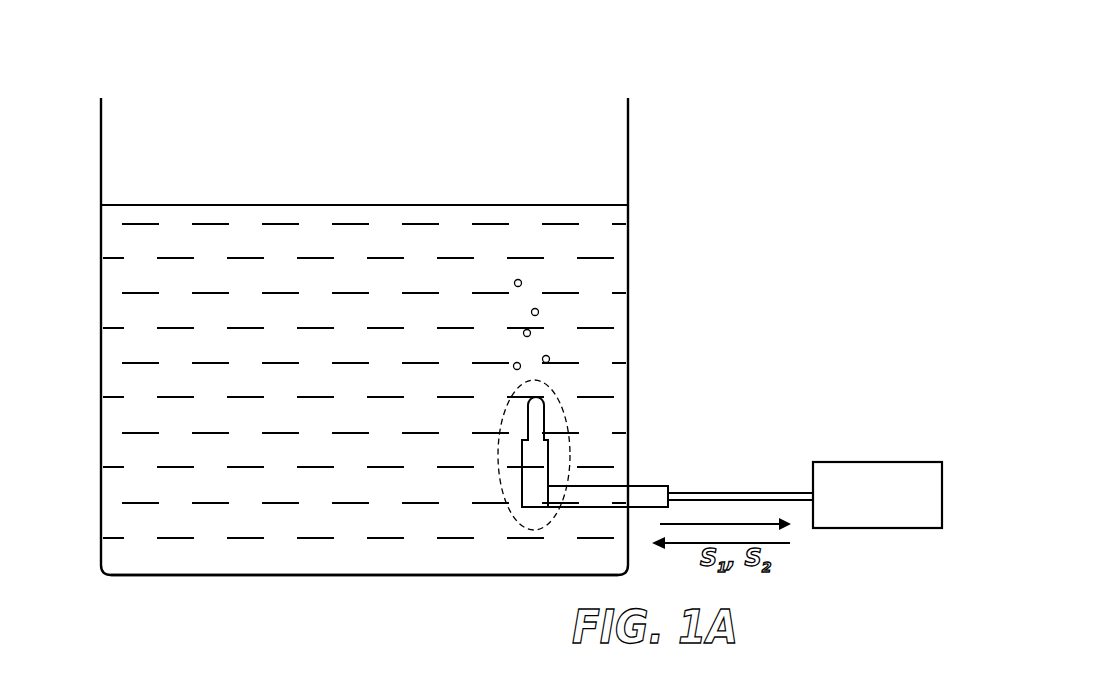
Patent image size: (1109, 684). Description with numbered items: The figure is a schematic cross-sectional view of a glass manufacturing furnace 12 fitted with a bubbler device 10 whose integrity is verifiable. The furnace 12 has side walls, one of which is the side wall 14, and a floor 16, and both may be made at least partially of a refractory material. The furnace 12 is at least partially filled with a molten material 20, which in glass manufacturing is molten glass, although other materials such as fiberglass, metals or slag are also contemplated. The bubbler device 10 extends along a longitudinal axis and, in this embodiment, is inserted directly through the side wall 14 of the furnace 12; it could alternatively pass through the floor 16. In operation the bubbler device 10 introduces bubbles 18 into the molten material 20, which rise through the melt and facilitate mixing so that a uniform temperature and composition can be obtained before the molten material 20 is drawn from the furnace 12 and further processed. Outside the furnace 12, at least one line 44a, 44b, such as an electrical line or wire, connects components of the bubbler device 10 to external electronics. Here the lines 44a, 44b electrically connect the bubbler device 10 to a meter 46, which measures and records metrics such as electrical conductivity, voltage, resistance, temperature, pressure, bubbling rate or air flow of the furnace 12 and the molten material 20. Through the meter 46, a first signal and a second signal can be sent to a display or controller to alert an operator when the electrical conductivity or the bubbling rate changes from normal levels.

The bubbler device 10 is at (508, 491).
The furnace 12 is at (650, 54).
The side wall 14 is at (614, 222).
The floor 16 is at (228, 577).
The bubbles 18 is at (539, 314).
The molten material 20 is at (178, 333).
The line 44a is at (773, 489).
The line 44b is at (761, 453).
The meter 46 is at (910, 478).